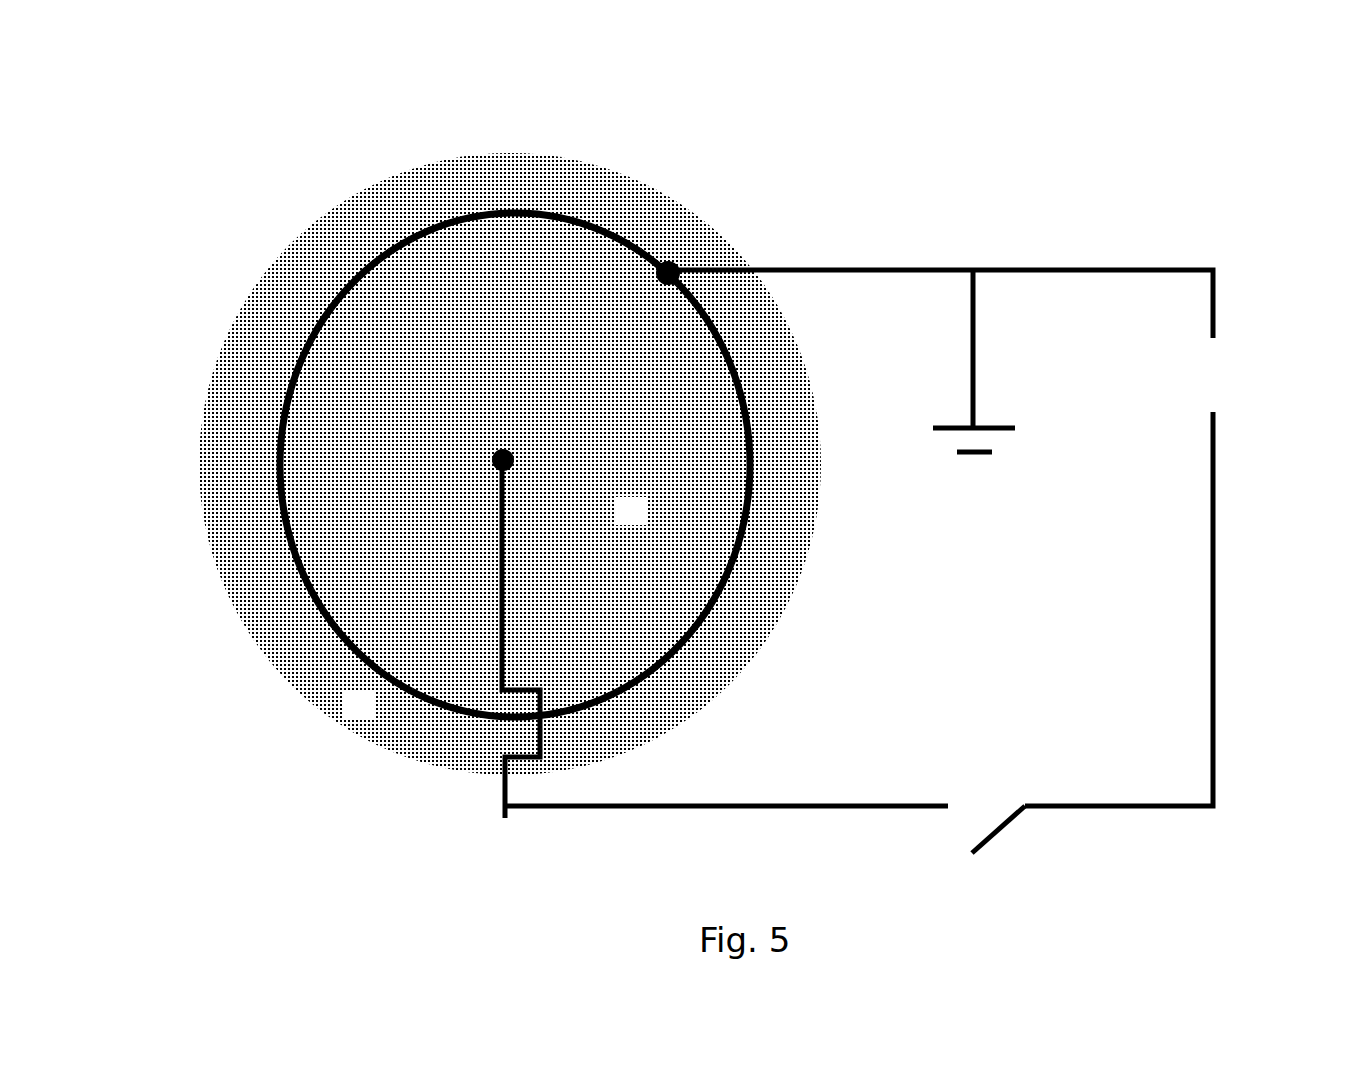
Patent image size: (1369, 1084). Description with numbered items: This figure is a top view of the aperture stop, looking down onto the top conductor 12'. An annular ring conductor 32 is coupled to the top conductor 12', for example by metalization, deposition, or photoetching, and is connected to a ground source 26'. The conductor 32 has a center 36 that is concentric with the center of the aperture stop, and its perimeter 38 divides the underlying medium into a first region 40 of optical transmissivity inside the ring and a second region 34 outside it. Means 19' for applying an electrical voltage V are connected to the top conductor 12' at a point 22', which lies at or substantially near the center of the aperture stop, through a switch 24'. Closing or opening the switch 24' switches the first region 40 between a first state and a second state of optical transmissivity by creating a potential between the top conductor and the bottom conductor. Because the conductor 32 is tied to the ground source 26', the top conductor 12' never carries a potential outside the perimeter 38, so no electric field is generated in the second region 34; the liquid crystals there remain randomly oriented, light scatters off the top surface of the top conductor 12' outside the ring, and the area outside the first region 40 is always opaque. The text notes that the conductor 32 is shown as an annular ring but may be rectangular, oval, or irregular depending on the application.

The top conductor 12' is at (476, 464).
The conductor 32 is at (537, 204).
The perimeter 38 is at (517, 399).
The second region 34 is at (370, 715).
The first region 40 is at (642, 520).
The point 22' is at (296, 574).
The center 36 is at (500, 457).
The means for applying an electrical voltage 19' is at (930, 583).
The ground source 26' is at (1021, 361).
The switch 24' is at (1033, 851).